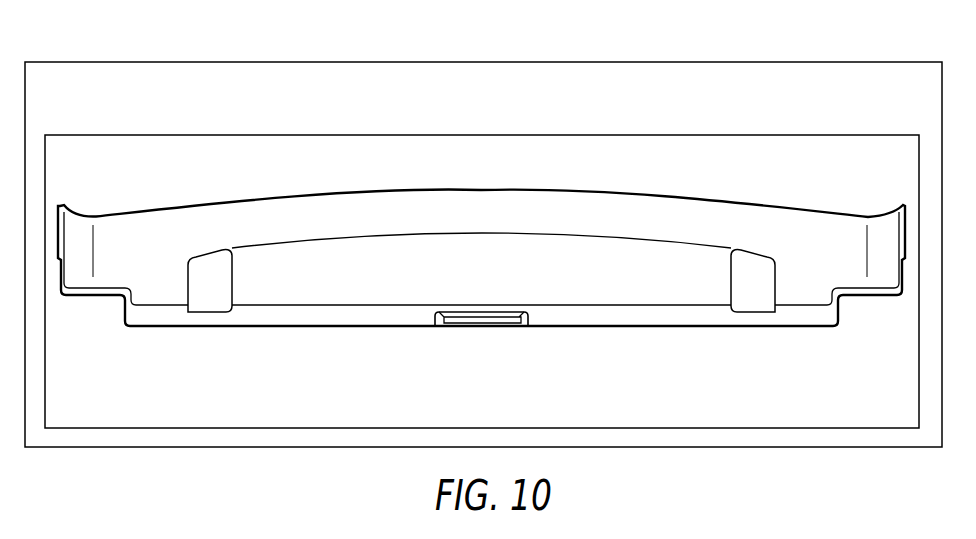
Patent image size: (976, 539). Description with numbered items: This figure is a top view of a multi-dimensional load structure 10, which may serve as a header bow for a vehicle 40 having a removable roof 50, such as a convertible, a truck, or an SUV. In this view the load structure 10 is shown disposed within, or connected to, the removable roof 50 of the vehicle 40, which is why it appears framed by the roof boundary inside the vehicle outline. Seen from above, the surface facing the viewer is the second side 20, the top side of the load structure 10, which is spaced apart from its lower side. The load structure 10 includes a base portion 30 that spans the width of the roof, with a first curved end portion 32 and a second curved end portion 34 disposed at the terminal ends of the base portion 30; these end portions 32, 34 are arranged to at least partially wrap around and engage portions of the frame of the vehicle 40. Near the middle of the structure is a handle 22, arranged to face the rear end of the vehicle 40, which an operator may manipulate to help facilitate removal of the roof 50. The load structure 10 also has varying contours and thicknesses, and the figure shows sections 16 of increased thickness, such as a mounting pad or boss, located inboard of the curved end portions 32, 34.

The load structure 10 is at (147, 204).
The sections of increased thickness 16 is at (209, 288).
The second side 20 is at (686, 277).
The handle 22 is at (486, 336).
The base portion 30 is at (554, 219).
The first curved end portion 32 is at (885, 263).
The second curved end portion 34 is at (78, 259).
The vehicle 40 is at (840, 62).
The removable roof 50 is at (848, 135).